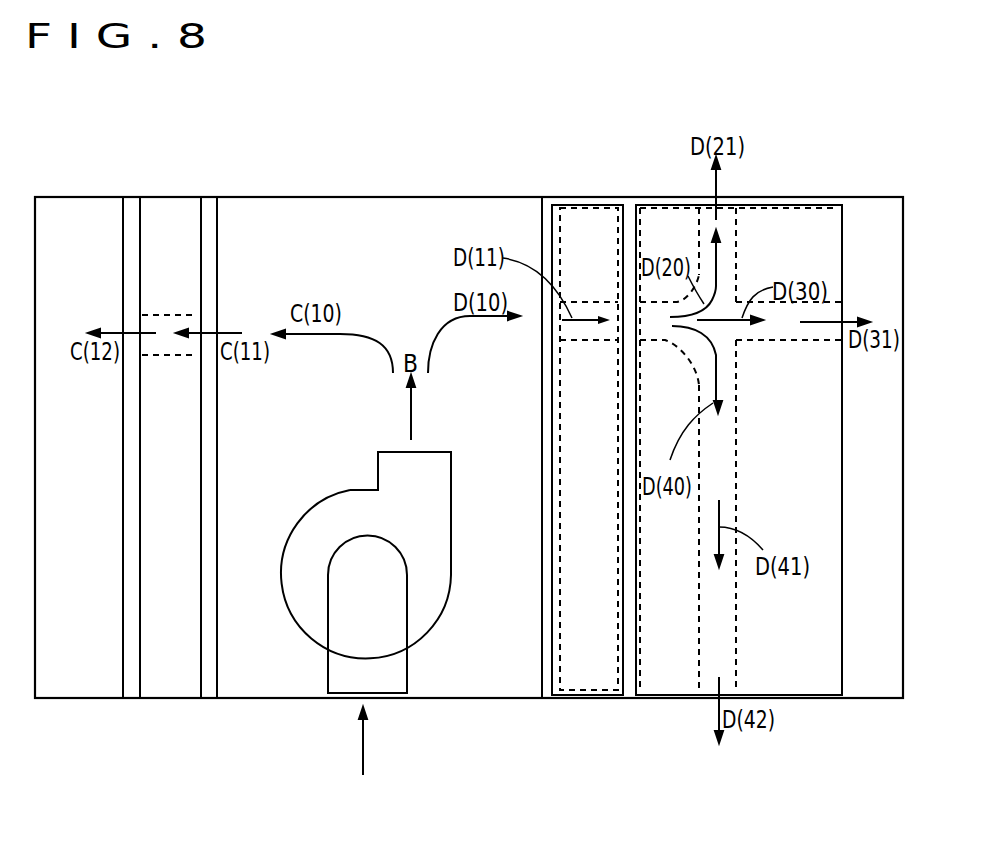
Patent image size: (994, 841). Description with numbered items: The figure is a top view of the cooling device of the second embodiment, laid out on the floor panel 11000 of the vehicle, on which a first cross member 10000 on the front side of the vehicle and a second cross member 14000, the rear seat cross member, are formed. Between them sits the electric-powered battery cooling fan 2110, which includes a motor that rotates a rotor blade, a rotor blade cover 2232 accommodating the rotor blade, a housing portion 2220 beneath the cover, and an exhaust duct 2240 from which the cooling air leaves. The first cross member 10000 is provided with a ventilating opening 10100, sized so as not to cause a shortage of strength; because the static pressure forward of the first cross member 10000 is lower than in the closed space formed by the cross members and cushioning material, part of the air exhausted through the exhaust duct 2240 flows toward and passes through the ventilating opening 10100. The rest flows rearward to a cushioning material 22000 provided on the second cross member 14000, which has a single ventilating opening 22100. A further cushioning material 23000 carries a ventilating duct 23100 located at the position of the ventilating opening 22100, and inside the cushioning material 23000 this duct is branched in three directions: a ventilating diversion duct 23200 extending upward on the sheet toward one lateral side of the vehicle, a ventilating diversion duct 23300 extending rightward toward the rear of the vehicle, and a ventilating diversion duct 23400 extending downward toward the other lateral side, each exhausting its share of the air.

The first cross member 10000 is at (172, 211).
The ventilating opening 10100 is at (153, 325).
The floor panel 11000 is at (343, 211).
The second cross member 14000 is at (543, 211).
The electric-powered battery cooling fan 2110 is at (401, 536).
The motor housing 2220 is at (400, 663).
The rotor blade cover 2232 is at (447, 605).
The exhaust duct 2240 is at (428, 468).
The cushioning material 22000 is at (600, 217).
The ventilating opening 22100 is at (585, 335).
The cushioning material 23000 is at (765, 221).
The ventilating duct 23100 is at (667, 342).
The ventilating diversion duct 23200 is at (736, 278).
The ventilating diversion duct 23300 is at (793, 333).
The ventilating diversion duct 23400 is at (727, 517).